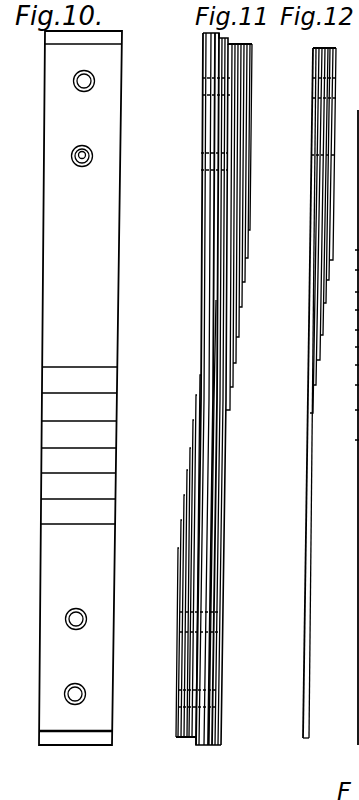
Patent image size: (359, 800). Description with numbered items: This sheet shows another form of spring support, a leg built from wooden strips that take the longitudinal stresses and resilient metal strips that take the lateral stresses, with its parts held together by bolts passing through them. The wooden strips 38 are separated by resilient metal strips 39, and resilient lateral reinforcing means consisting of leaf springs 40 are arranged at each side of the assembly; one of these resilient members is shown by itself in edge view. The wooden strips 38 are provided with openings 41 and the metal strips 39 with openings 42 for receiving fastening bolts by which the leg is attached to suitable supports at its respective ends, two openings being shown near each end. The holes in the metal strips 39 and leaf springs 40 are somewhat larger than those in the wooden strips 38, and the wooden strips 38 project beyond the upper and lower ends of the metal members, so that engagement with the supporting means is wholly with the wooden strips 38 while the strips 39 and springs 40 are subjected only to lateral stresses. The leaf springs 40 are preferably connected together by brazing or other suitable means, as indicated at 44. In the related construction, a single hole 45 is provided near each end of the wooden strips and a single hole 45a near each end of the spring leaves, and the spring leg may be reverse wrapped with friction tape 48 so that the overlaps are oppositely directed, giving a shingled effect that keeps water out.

In FIG. 10, the wooden strips 38 is at (110, 39).
In FIG. 11, the wooden strips 38 is at (220, 452).
In FIG. 11, the resilient metal strips 39 is at (216, 478).
In FIG. 10, the leaf springs 40 is at (80, 388).
In FIG. 11, the leaf springs 40 is at (250, 140).
In FIG. 12, the leaf springs 40 is at (312, 282).
In FIG. 10, the openings 41 is at (100, 137).
In FIG. 10, the openings 42 is at (76, 163).
In FIG. 10, the brazing connection 44 is at (57, 743).
In FIG. 11, the brazing connection 44 is at (254, 42).
In FIG. 12, the brazing connection 44 is at (330, 47).
In FIG. 11, the hole 45 is at (179, 789).
In FIG. 11, the hole 45a is at (143, 784).
In FIG. 11, the friction tape wrapping 48 is at (232, 798).